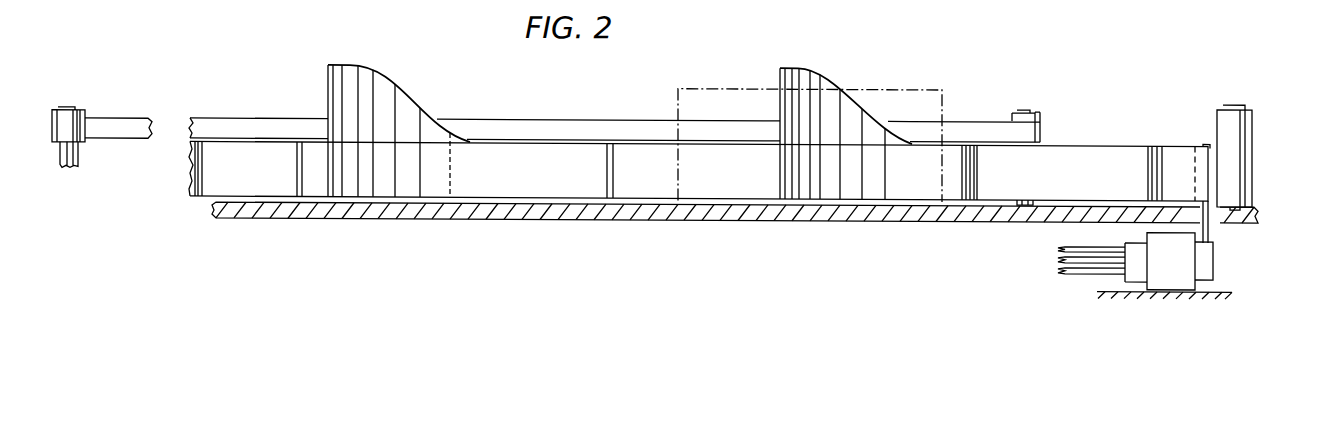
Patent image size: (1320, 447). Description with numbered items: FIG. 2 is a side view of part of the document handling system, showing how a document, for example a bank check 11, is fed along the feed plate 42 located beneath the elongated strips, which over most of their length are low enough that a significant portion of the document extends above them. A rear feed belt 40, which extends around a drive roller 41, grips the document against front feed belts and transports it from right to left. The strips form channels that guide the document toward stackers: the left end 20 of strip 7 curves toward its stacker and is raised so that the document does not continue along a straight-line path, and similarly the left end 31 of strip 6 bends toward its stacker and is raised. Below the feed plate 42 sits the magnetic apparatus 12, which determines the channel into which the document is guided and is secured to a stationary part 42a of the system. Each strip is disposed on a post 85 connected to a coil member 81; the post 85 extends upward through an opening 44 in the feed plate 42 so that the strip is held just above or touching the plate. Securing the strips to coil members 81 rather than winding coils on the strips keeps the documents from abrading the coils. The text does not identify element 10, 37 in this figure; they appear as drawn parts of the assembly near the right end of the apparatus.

The strip 6 is at (558, 139).
The strip 7 is at (1093, 140).
The end block 10 is at (1217, 121).
The bank check 11 is at (933, 83).
The magnetic apparatus 12 is at (1172, 286).
The left end of strip 20 is at (830, 73).
The left end of strip 31 is at (392, 75).
The nut 37 is at (1038, 112).
The rear feed belt 40 is at (978, 117).
The drive roller 41 is at (83, 110).
The feed plate 42 is at (470, 218).
The stationary part 42a is at (1125, 291).
The opening in feed plate 44 is at (1210, 217).
The coil member 81 is at (1203, 274).
The post 85 is at (1200, 230).